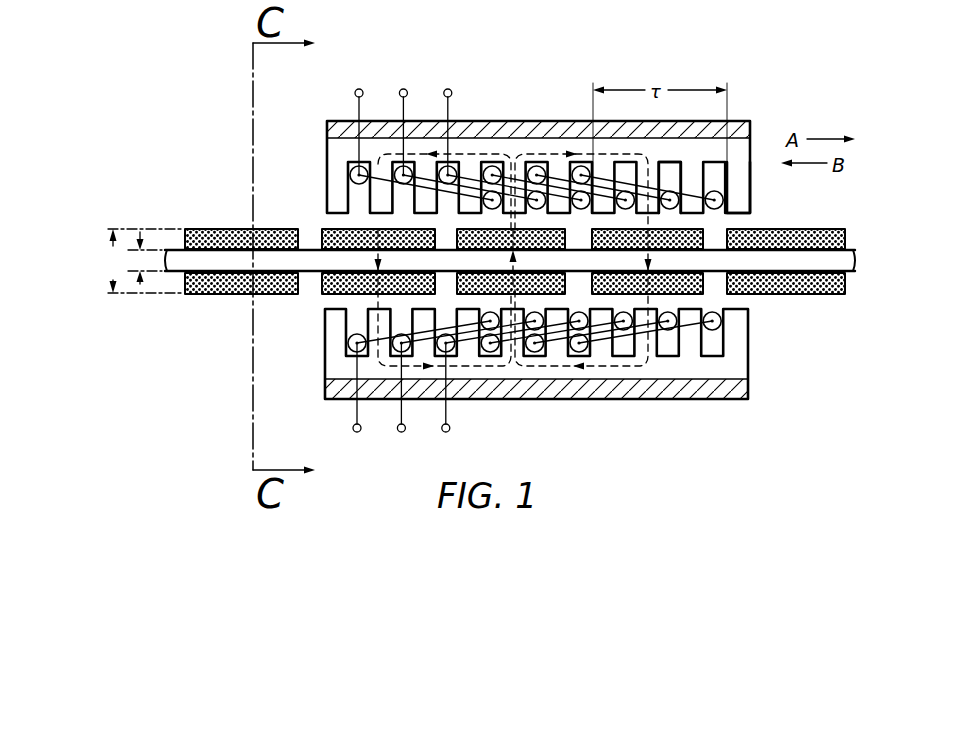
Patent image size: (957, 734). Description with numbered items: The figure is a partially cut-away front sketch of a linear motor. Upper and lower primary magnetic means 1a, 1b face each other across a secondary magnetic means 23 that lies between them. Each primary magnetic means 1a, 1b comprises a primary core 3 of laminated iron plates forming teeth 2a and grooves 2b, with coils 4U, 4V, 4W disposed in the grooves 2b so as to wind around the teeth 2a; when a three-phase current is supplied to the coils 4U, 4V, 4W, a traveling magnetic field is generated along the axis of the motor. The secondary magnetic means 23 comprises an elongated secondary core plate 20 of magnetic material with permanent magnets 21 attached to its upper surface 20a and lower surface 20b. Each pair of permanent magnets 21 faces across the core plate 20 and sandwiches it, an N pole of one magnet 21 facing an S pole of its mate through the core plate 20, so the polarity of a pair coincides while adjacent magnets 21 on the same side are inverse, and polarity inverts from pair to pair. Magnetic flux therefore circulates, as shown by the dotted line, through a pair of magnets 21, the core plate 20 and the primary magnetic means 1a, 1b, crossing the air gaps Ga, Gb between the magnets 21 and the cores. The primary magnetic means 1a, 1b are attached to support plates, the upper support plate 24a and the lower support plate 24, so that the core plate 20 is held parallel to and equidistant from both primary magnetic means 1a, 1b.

The primary magnetic means 1a is at (547, 137).
The primary magnetic means 1b is at (546, 374).
The teeth 2a is at (751, 190).
The grooves 2b is at (673, 168).
The primary core 3 is at (546, 251).
The coil 4U is at (492, 163).
The coil 4V is at (537, 163).
The coil 4W is at (580, 163).
The secondary core plate 20 is at (505, 256).
The upper surface 20a is at (318, 248).
The lower surface 20b is at (313, 273).
The permanent magnet 21 is at (222, 228).
The secondary magnetic means 23 is at (475, 218).
The lower back yoke 24 is at (750, 392).
The support plate 24a is at (738, 128).
The upper air gap Ga is at (740, 222).
The lower air gap Gb is at (745, 303).